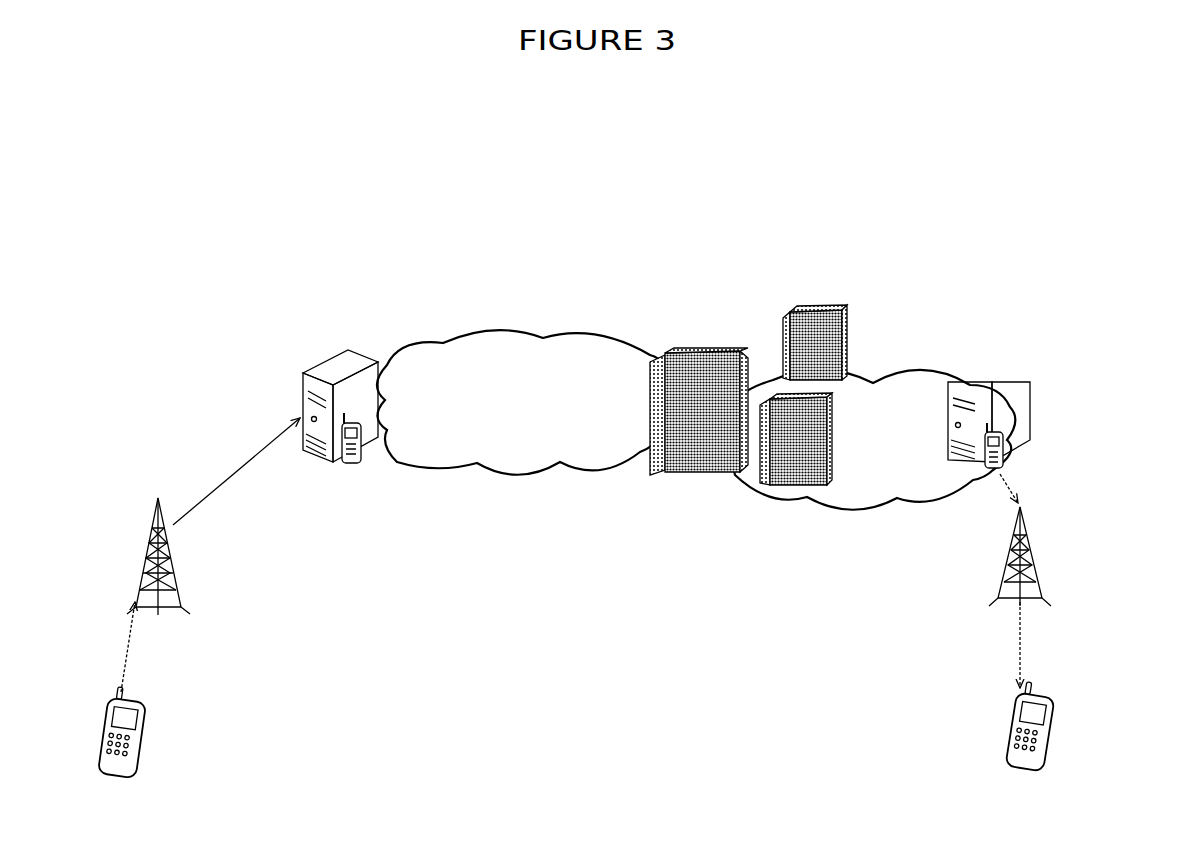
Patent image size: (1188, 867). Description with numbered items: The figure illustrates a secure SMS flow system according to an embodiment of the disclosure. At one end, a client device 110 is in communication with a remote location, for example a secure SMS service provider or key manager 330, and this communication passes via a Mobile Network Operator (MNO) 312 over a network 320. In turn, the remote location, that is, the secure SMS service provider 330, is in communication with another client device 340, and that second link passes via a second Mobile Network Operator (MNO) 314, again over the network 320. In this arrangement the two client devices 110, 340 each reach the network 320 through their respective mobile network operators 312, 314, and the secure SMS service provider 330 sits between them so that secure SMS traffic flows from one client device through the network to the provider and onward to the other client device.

The client device 110 is at (148, 770).
The Mobile Network Operator 312 is at (340, 389).
The Mobile Network Operator 314 is at (993, 405).
The network 320 is at (495, 326).
The secure SMS service provider 330 is at (738, 338).
The client device 340 is at (1058, 725).